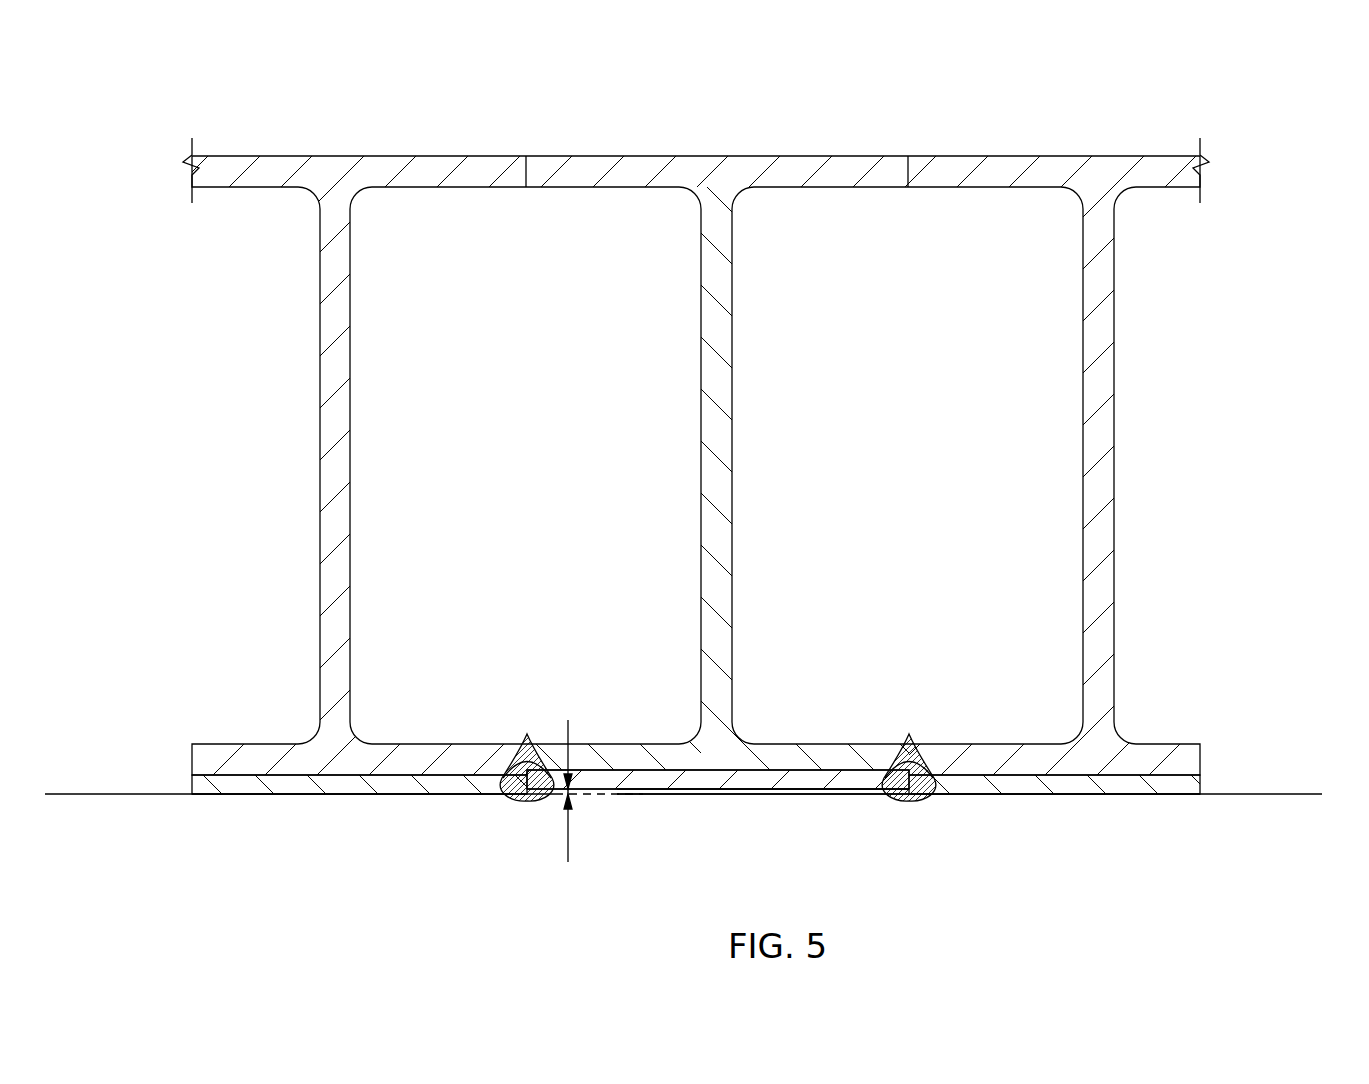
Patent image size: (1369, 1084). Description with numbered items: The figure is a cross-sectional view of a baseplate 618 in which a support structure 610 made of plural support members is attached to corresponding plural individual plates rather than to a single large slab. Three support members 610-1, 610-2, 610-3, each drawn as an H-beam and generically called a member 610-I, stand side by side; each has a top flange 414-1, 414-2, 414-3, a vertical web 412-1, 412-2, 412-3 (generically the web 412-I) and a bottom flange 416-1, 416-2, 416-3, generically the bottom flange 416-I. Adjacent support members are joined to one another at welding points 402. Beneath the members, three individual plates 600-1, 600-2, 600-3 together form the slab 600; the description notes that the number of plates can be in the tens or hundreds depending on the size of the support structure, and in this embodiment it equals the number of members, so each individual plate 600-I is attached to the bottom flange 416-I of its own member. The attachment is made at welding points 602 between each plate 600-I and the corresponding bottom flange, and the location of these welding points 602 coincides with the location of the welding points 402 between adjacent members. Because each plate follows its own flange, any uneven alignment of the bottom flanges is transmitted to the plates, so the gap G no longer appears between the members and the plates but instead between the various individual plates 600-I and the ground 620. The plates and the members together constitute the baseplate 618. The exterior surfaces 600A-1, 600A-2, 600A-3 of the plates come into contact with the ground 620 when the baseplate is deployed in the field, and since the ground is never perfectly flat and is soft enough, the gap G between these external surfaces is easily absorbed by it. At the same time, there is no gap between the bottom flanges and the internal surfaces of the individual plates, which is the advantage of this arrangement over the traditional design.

The baseplate 618 is at (1242, 76).
The support structure 610 is at (256, 466).
The first support member 610-1 is at (1129, 314).
The second support member 610-2 is at (747, 314).
The third support member 610-3 is at (364, 314).
The support member 610-I is at (747, 439).
The top flange of first support member 414-1 is at (1065, 165).
The top flange of second support member 414-2 is at (775, 165).
The top flange of third support member 414-3 is at (340, 165).
The web of first support member 412-1 is at (1100, 541).
The web of second support member 412-2 is at (720, 528).
The web of third support member 412-3 is at (338, 528).
The support member web 412-I is at (720, 631).
The bottom flange of first support member 416-1 is at (1152, 756).
The bottom flange of second support member 416-2 is at (778, 756).
The bottom flange of third support member 416-3 is at (425, 756).
The bottom flange 416-I is at (603, 756).
The welding points between adjacent support members 402 is at (527, 734).
The welding points 602 is at (527, 801).
The slab 600 is at (1220, 816).
The first individual plate 600-1 is at (1037, 790).
The second individual plate 600-2 is at (735, 790).
The third individual plate 600-3 is at (372, 790).
The individual plate 600-I is at (830, 806).
The exterior surface of first individual plate 600A-1 is at (1158, 790).
The exterior surface of second individual plate 600A-2 is at (645, 795).
The exterior surface of third individual plate 600A-3 is at (220, 795).
The ground 620 is at (800, 795).
The gap G is at (570, 833).